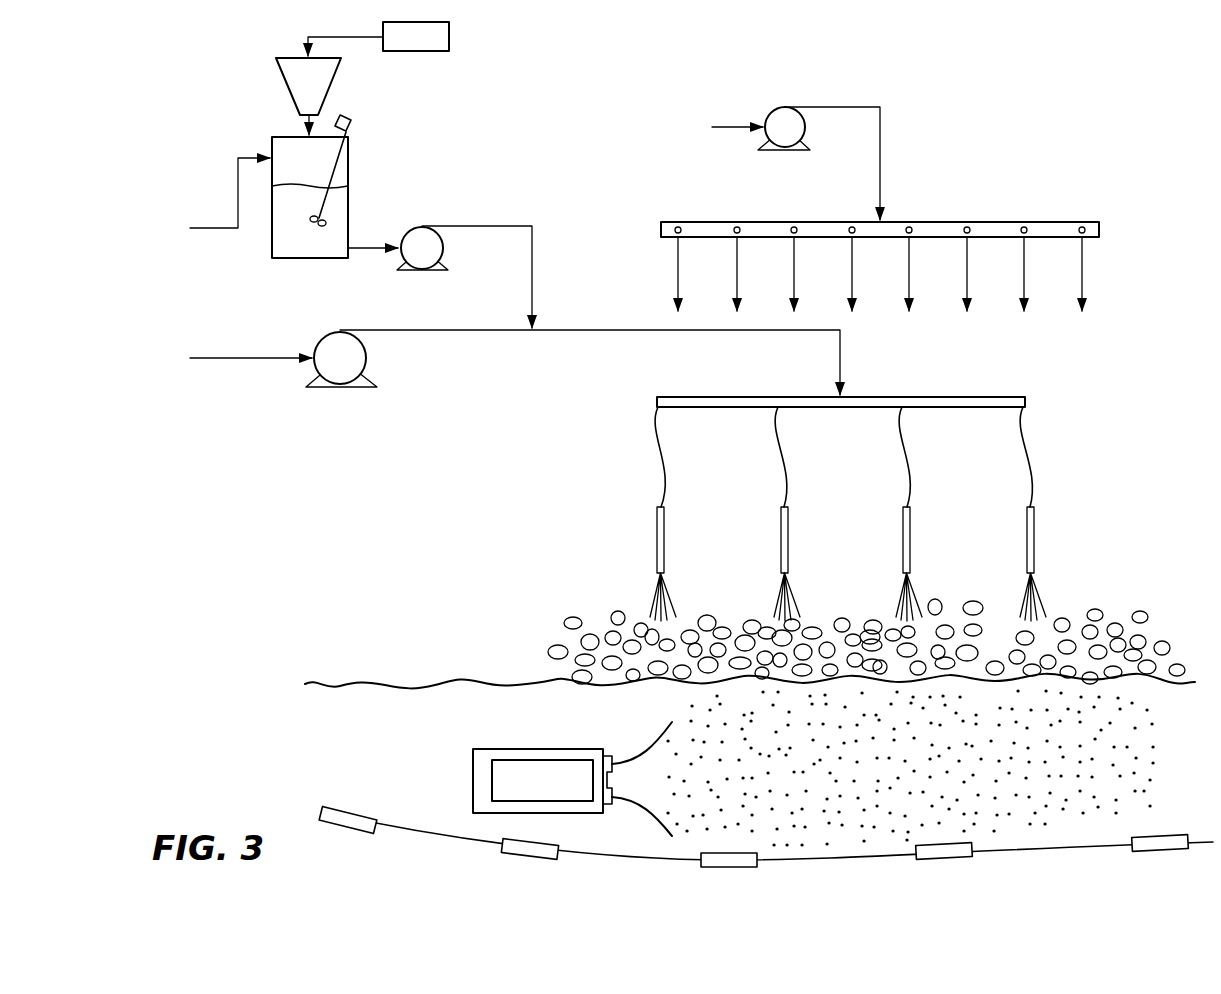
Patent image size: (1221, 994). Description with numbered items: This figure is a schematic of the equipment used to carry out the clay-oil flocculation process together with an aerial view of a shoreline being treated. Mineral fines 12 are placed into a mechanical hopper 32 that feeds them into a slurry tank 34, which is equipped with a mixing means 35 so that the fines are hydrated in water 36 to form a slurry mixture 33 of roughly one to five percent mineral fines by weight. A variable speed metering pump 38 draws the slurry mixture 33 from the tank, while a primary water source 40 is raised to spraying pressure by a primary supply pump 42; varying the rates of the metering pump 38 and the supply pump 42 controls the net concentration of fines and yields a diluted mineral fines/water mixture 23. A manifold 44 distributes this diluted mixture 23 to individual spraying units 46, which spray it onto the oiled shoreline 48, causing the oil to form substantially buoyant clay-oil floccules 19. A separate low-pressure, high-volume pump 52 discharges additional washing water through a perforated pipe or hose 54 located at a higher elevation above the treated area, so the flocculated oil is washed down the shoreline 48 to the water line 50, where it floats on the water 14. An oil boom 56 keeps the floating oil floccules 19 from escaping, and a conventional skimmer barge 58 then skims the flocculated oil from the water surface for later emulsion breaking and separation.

The mineral fines 12 is at (452, 38).
The mechanical hopper 32 is at (287, 79).
The slurry tank 34 is at (349, 161).
The mixing means 35 is at (348, 115).
The slurry mixture 33 is at (337, 215).
The water 36 is at (216, 198).
The variable speed metering pump 38 is at (444, 250).
The primary supply pump 42 is at (366, 352).
The low-pressure, high-volume pump 52 is at (804, 126).
The primary water source 40 is at (462, 243).
The perforated pipe or hose 54 is at (989, 222).
The manifold 44 is at (910, 397).
The spraying units 46 is at (662, 443).
The diluted mineral fines/water mixture 23 is at (773, 600).
The oiled shoreline 48 is at (590, 608).
The water line 50 is at (522, 683).
The water 14 is at (455, 727).
The skimmer barge 58 is at (522, 749).
The clay-oil floccules 19 is at (1112, 727).
The oil boom 56 is at (402, 828).